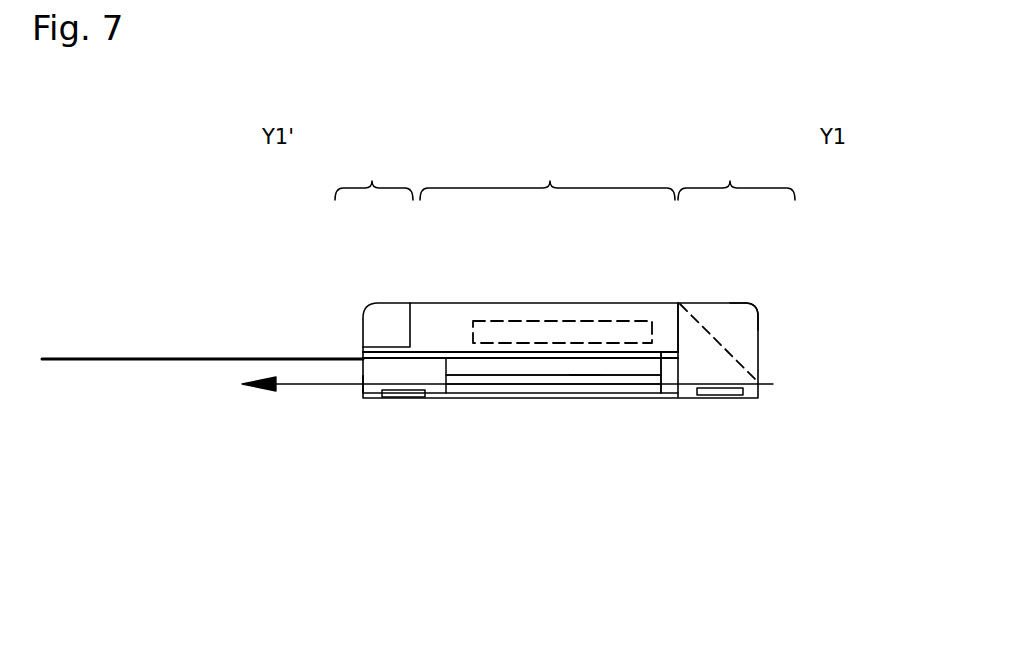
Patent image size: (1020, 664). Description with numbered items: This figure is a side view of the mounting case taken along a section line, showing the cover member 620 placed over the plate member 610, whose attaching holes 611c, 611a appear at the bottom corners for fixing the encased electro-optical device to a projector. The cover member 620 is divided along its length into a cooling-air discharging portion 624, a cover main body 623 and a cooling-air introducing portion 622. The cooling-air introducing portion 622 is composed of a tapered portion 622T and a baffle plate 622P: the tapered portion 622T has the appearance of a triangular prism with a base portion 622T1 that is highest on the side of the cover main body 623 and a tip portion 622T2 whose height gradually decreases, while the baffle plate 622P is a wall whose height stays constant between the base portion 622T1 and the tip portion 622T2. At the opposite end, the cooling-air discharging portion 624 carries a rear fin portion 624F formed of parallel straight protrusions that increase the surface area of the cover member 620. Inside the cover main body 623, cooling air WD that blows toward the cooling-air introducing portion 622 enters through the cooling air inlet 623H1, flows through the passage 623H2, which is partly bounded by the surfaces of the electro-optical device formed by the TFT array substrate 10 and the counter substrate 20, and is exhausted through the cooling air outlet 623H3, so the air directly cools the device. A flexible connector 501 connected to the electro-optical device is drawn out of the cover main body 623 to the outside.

The cover member 620 is at (619, 124).
The cooling-air discharging portion 624 is at (374, 179).
The cover main body 623 is at (547, 179).
The cooling-air introducing portion 622 is at (736, 278).
The rear fin portion 624F is at (385, 314).
The flexible connector 501 is at (60, 359).
The plate member 610 is at (460, 440).
The tip portion 622T2 is at (760, 388).
The counter substrate 20 is at (590, 343).
The tapered portion 622T is at (730, 355).
The base portion 622T1 is at (679, 303).
The baffle plate 622P is at (724, 302).
The cooling air outlet 623H3 is at (364, 384).
The TFT array substrate 10 is at (522, 371).
The cooling air WD is at (627, 382).
The passage 623H2 is at (578, 372).
The cooling air inlet 623H1 is at (680, 367).
The attaching hole 611c is at (394, 400).
The attaching hole 611a is at (744, 396).